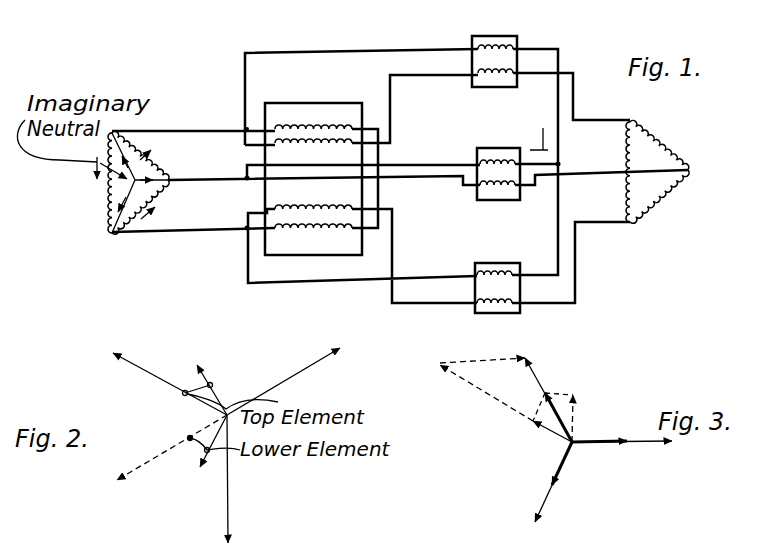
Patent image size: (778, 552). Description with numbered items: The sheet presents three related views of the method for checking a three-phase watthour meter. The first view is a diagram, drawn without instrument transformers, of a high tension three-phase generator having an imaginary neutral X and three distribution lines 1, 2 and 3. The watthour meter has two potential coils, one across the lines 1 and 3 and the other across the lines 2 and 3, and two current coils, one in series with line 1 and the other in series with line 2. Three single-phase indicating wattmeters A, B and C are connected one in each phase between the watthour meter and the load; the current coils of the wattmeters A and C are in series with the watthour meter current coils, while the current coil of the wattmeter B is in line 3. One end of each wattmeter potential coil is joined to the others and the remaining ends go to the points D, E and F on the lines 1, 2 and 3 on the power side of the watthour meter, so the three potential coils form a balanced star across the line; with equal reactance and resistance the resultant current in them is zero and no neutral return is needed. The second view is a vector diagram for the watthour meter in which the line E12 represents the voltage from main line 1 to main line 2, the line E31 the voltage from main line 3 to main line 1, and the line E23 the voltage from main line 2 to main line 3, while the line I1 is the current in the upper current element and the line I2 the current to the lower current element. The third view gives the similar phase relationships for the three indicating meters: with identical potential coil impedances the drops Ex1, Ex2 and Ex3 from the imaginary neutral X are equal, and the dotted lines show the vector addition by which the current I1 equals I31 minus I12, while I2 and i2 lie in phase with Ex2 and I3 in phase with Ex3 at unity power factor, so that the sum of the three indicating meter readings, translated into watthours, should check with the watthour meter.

In FIG. 1, the single-phase indicating wattmeter A is at (477, 47).
In FIG. 1, the single-phase indicating wattmeter B is at (478, 152).
In FIG. 1, the single-phase indicating wattmeter C is at (478, 268).
In FIG. 1, the connection point on line 1 D is at (246, 128).
In FIG. 1, the connection point on line 2 E is at (246, 177).
In FIG. 1, the connection point on line 3 F is at (246, 227).
In FIG. 1, the imaginary neutral X is at (127, 188).
In FIG. 1, the distribution line 1 is at (214, 123).
In FIG. 1, the distribution line 2 is at (220, 223).
In FIG. 1, the distribution line 3 is at (218, 173).
In FIG. 2, the voltage vector E31 is at (164, 375).
In FIG. 3, the voltage vector E31 is at (500, 398).
In FIG. 2, the voltage vector E23 is at (231, 425).
In FIG. 2, the voltage vector E12 is at (247, 482).
In FIG. 2, the current vector I1 is at (206, 377).
In FIG. 3, the current vector I1 is at (553, 393).
In FIG. 2, the current vector I2 is at (206, 454).
In FIG. 3, the current vector I3 is at (590, 437).
In FIG. 3, the current vector i2 is at (560, 472).
In FIG. 3, the current vector I12 is at (577, 418).
In FIG. 3, the current vector I31 is at (546, 429).
In FIG. 3, the voltage vector Ex1 is at (548, 393).
In FIG. 3, the voltage vector Ex2 is at (548, 502).
In FIG. 3, the voltage vector Ex3 is at (650, 446).